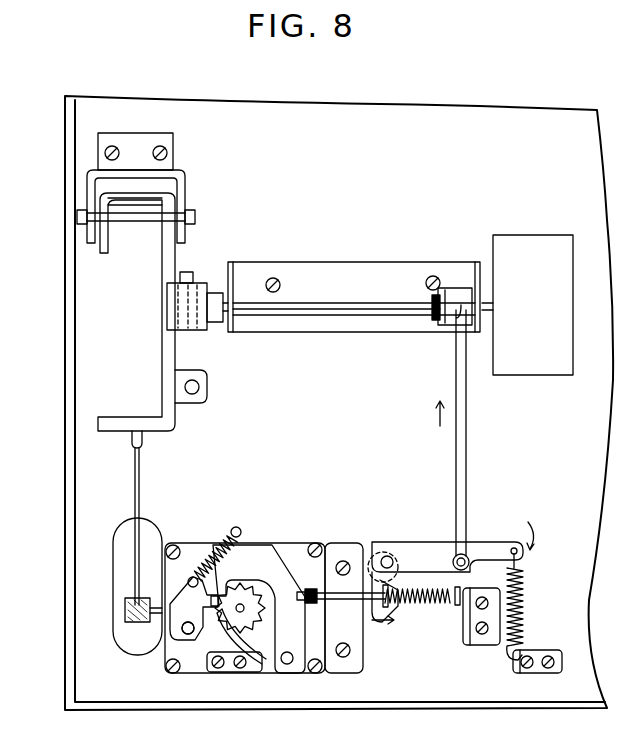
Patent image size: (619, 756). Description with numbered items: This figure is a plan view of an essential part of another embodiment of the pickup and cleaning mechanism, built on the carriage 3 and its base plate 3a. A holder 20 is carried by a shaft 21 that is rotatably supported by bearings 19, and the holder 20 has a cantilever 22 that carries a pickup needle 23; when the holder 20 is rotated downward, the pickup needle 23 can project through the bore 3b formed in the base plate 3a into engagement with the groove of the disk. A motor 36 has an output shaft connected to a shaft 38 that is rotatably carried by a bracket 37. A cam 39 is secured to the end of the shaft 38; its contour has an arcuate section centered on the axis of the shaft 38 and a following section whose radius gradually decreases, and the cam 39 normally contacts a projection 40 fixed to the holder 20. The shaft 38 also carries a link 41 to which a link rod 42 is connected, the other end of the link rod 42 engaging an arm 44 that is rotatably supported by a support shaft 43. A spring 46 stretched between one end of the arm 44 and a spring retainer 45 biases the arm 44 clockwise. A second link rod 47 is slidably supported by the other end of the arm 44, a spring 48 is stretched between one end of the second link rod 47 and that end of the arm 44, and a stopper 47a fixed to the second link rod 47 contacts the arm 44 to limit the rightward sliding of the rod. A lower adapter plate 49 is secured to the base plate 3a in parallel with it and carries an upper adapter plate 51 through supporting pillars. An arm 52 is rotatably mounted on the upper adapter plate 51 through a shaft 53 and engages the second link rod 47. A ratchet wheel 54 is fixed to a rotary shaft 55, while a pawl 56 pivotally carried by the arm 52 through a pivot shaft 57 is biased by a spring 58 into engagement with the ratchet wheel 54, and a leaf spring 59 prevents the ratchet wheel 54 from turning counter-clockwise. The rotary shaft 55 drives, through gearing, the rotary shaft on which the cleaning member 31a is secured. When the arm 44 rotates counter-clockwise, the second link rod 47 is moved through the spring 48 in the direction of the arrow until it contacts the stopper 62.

The carriage 3 is at (65, 273).
The base plate 3a is at (386, 106).
The bore 3b is at (120, 577).
The bearings 19 is at (134, 143).
The holder 20 is at (162, 262).
The shaft 21 is at (139, 223).
The cantilever 22 is at (135, 503).
The pickup needle 23 is at (125, 610).
The cleaning member 31a is at (142, 616).
The motor 36 is at (521, 245).
The bracket 37 is at (323, 265).
The shaft 38 is at (388, 303).
The cam 39 is at (193, 278).
The projection 40 is at (207, 329).
The link 41 is at (444, 290).
The link rod 42 is at (467, 419).
The support shaft 43 is at (390, 560).
The arm 44 is at (478, 545).
The spring retainer 45 is at (538, 657).
The spring 46 is at (524, 593).
The second link rod 47 is at (362, 602).
The stopper 47a is at (387, 614).
The spring 48 is at (418, 604).
The lower adapter plate 49 is at (362, 548).
The upper adapter plate 51 is at (315, 548).
The arm 52 is at (276, 565).
The shaft 53 is at (291, 664).
The ratchet wheel 54 is at (243, 600).
The rotary shaft 55 is at (268, 662).
The pawl 56 is at (176, 626).
The pivot shaft 57 is at (189, 636).
The spring 58 is at (206, 547).
The leaf spring 59 is at (235, 672).
The stopper 62 is at (478, 646).